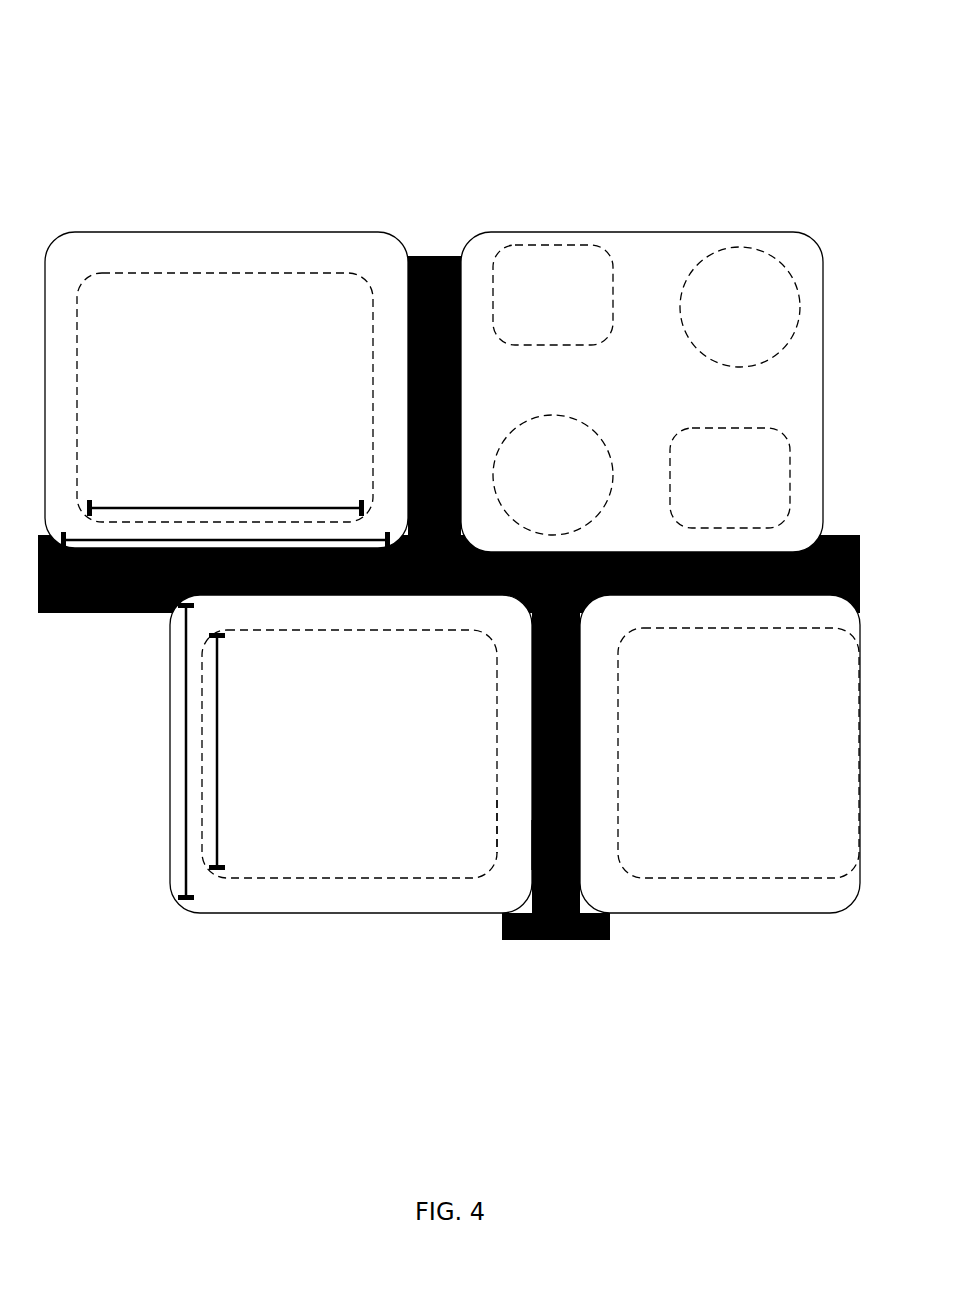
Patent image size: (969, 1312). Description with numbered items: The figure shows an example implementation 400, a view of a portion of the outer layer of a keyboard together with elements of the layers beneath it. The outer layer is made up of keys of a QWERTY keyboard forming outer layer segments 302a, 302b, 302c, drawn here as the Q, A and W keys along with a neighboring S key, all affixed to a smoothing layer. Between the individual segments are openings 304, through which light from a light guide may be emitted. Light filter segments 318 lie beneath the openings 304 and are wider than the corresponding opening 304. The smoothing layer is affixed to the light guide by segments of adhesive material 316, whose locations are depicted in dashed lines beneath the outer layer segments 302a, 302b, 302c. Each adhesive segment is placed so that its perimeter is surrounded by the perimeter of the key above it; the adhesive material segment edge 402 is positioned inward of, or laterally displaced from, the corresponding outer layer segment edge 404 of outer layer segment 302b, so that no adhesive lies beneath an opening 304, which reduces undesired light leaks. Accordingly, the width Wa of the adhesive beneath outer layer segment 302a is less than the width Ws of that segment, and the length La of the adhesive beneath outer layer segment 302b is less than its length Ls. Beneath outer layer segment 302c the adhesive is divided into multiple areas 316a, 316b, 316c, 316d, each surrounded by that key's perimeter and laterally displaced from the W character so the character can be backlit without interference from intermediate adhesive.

The example implementation 400 is at (160, 70).
The outer layer segment 302a is at (285, 232).
The outer layer segment 302b is at (350, 913).
The outer layer segment 302c is at (642, 232).
The opening 304 is at (425, 236).
The adhesive material 316 is at (138, 272).
The adhesive material segment 316a is at (553, 295).
The adhesive material segment 316b is at (740, 307).
The adhesive material segment 316c is at (553, 475).
The adhesive material segment 316d is at (730, 478).
The light filter segment 318 is at (443, 256).
The adhesive material segment edge 402 is at (498, 830).
The outer layer segment edge 404 is at (530, 845).
The width of adhesive material segment Wa is at (200, 505).
The width of outer layer segment Ws is at (167, 537).
The length of outer layer segment Ls is at (186, 740).
The length of adhesive material segment La is at (217, 815).